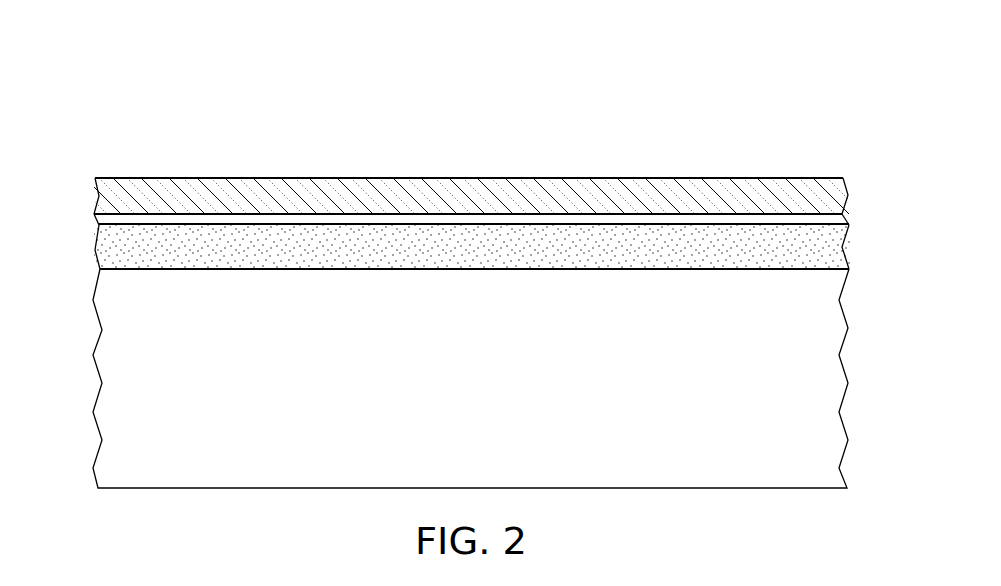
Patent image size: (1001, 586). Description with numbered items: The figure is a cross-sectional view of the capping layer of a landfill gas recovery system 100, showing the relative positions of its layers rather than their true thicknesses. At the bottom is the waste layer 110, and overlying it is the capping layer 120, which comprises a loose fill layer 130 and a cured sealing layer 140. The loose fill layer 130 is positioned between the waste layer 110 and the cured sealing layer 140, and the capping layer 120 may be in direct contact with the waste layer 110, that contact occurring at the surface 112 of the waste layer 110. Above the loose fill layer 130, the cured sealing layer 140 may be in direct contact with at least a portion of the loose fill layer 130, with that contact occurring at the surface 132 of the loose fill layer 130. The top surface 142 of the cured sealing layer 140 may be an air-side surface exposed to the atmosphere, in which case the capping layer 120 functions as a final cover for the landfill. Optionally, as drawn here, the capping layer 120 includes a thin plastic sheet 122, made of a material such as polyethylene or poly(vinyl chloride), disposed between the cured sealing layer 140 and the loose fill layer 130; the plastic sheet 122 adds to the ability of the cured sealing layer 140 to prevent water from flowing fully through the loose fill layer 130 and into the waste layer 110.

The landfill gas recovery system 100 is at (730, 125).
The waste layer 110 is at (103, 351).
The surface of the waste layer 112 is at (535, 270).
The capping layer 120 is at (858, 178).
The plastic sheet 122 is at (101, 220).
The loose fill layer 130 is at (101, 258).
The surface of the loose fill layer 132 is at (620, 236).
The cured sealing layer 140 is at (103, 197).
The top surface of the cured sealing layer 142 is at (533, 178).